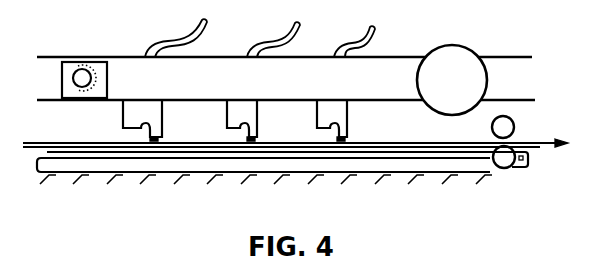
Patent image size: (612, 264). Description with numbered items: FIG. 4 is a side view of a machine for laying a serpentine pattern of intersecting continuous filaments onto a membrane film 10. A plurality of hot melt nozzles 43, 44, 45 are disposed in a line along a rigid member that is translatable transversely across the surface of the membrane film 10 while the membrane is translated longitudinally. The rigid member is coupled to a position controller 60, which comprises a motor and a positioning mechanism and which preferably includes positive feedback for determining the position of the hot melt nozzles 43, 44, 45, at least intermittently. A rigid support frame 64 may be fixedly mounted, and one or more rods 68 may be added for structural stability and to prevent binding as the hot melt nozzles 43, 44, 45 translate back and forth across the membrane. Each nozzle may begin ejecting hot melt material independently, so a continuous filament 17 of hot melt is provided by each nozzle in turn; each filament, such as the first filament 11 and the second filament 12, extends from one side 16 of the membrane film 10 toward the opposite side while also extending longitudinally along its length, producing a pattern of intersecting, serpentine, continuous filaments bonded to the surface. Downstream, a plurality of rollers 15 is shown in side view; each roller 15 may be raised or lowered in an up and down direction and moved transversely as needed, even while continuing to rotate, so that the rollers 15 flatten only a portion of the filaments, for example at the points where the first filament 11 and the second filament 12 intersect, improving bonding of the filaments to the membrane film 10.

The membrane film 10 is at (410, 145).
The first filament 11 is at (153, 141).
The second filament 12 is at (250, 141).
The roller 15 is at (507, 123).
The one side 16 is at (506, 155).
The continuous filament 17 is at (341, 141).
The hot melt nozzle 43 is at (157, 131).
The hot melt nozzle 44 is at (254, 128).
The hot melt nozzle 45 is at (349, 128).
The position controller 60 is at (458, 62).
The rigid support frame 64 is at (377, 67).
The rod 68 is at (77, 73).